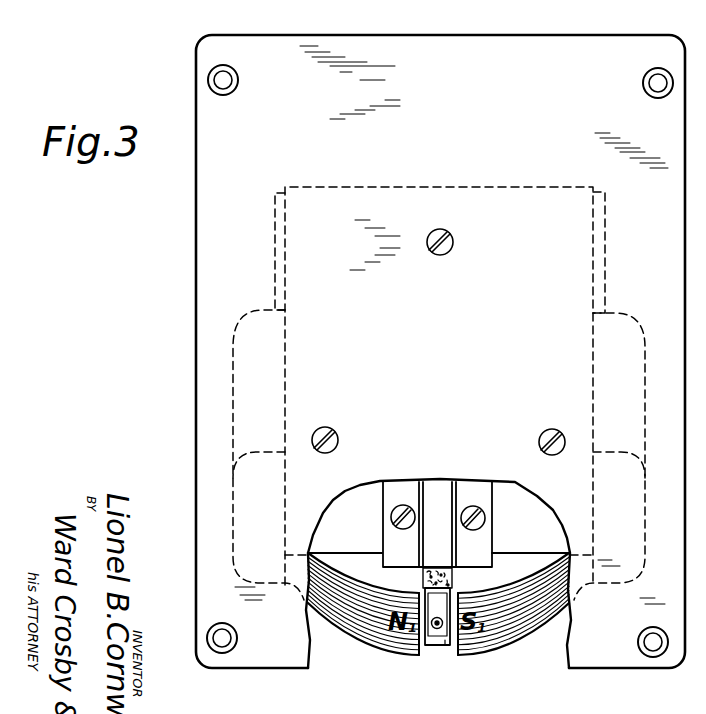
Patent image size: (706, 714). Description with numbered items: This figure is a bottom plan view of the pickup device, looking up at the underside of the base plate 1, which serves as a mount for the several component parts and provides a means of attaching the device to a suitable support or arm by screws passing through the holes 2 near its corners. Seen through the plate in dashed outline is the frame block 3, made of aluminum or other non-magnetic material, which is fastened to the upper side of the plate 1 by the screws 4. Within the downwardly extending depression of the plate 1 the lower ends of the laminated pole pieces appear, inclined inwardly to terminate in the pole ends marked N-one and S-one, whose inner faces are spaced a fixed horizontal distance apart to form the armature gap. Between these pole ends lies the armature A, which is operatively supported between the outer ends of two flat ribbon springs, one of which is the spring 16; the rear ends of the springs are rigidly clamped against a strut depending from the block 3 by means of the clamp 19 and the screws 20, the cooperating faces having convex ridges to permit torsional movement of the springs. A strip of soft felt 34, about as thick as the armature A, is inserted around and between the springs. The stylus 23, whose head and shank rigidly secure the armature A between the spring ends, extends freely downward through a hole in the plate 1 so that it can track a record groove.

The base plate 1 is at (393, 56).
The holes 2 is at (229, 67).
The frame block 3 is at (417, 197).
The screws 4 is at (454, 239).
The flat ribbon spring 16 is at (437, 604).
The clamp 19 is at (398, 545).
The screws 20 is at (392, 514).
The stylus 23 is at (440, 637).
The strip of soft felt 34 is at (453, 584).
The armature A is at (445, 640).